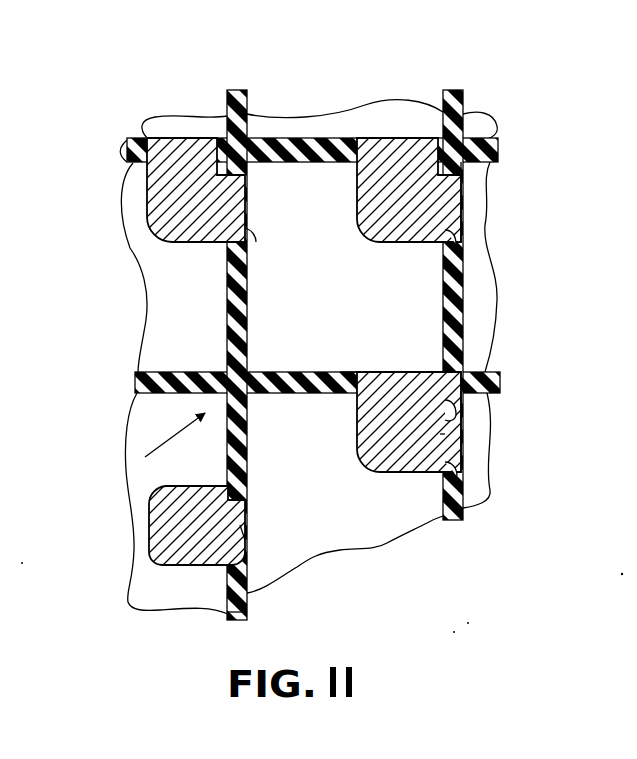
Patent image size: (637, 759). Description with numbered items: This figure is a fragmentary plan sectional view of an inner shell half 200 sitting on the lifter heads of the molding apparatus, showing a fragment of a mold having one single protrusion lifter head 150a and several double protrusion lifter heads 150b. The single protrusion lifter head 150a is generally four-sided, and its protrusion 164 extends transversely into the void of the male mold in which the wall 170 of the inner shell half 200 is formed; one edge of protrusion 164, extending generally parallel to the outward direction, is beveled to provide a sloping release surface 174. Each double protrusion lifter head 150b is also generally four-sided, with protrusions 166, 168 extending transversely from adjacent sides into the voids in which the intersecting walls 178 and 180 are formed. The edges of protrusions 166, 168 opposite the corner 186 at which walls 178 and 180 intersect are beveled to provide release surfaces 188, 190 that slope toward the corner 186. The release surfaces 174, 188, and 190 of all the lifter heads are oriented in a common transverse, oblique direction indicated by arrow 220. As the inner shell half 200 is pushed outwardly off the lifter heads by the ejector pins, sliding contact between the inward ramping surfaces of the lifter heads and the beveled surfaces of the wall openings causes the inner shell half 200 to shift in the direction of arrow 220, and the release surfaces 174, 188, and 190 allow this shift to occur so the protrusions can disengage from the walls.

The single protrusion lifter head 150a is at (145, 557).
The double protrusion lifter head 150b is at (201, 244).
The protrusion 164 is at (240, 509).
The protrusion 166 is at (458, 434).
The protrusion 168 is at (412, 372).
The wall 170 is at (248, 598).
The release surface 174 is at (243, 533).
The wall 178 is at (458, 522).
The wall 180 is at (352, 372).
The corner 186 is at (465, 415).
The release surface 188 is at (258, 236).
The release surface 190 is at (140, 140).
The inner shell half 200 is at (245, 92).
The arrow indicating oblique transverse direction 220 is at (165, 450).